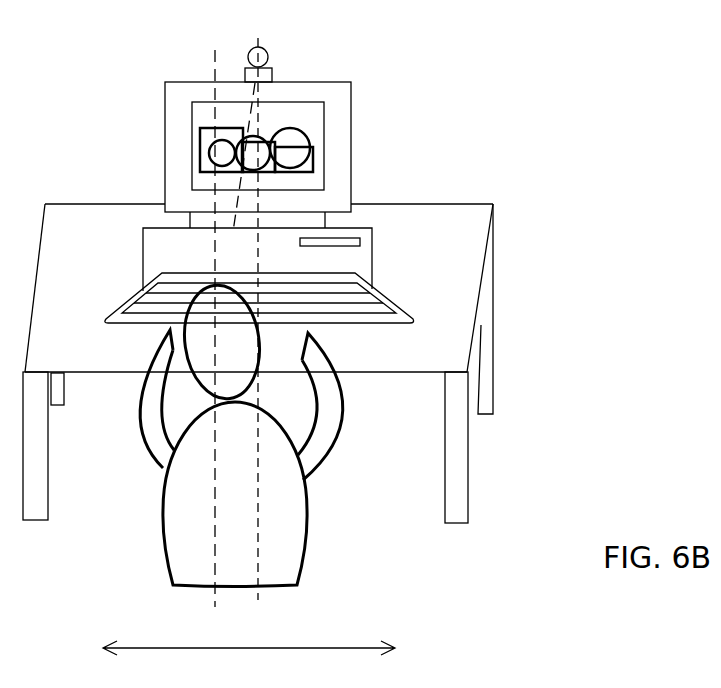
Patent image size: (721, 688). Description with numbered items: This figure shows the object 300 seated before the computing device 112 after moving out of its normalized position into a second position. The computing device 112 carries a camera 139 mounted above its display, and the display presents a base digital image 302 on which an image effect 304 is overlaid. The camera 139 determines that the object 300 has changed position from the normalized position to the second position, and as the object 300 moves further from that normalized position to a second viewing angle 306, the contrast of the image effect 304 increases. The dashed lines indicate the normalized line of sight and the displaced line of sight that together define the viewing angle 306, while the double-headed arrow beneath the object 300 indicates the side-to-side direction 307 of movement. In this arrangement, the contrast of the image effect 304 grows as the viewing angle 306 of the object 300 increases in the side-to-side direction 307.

The computing device 112 is at (348, 158).
The camera 139 is at (268, 60).
The object 300 is at (183, 348).
The base digital image 302 is at (207, 128).
The image effect 304 is at (303, 130).
The second viewing angle 306 is at (265, 231).
The side-to-side direction 307 is at (302, 647).